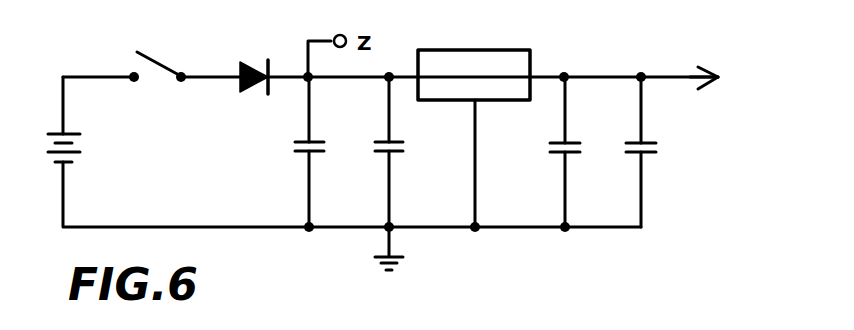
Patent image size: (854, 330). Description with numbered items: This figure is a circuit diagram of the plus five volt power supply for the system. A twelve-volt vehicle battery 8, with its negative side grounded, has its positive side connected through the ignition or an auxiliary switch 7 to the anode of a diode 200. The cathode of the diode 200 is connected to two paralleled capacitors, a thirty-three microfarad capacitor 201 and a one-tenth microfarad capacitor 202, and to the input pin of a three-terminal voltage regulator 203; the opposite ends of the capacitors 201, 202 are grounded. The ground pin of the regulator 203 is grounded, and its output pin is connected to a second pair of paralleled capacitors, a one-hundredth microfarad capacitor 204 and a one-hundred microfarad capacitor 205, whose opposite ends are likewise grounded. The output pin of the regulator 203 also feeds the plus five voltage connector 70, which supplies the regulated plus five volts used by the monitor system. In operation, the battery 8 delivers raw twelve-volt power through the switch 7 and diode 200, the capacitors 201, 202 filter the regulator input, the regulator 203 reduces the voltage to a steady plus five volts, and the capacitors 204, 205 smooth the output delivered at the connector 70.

The auxiliary switch 7 is at (165, 48).
The vehicle battery 8 is at (84, 150).
The diode 200 is at (256, 62).
The capacitor 201 is at (296, 148).
The capacitor 202 is at (406, 147).
The voltage regulator 203 is at (478, 50).
The capacitor 204 is at (550, 147).
The capacitor 205 is at (660, 148).
The plus five voltage connector 70 is at (695, 62).